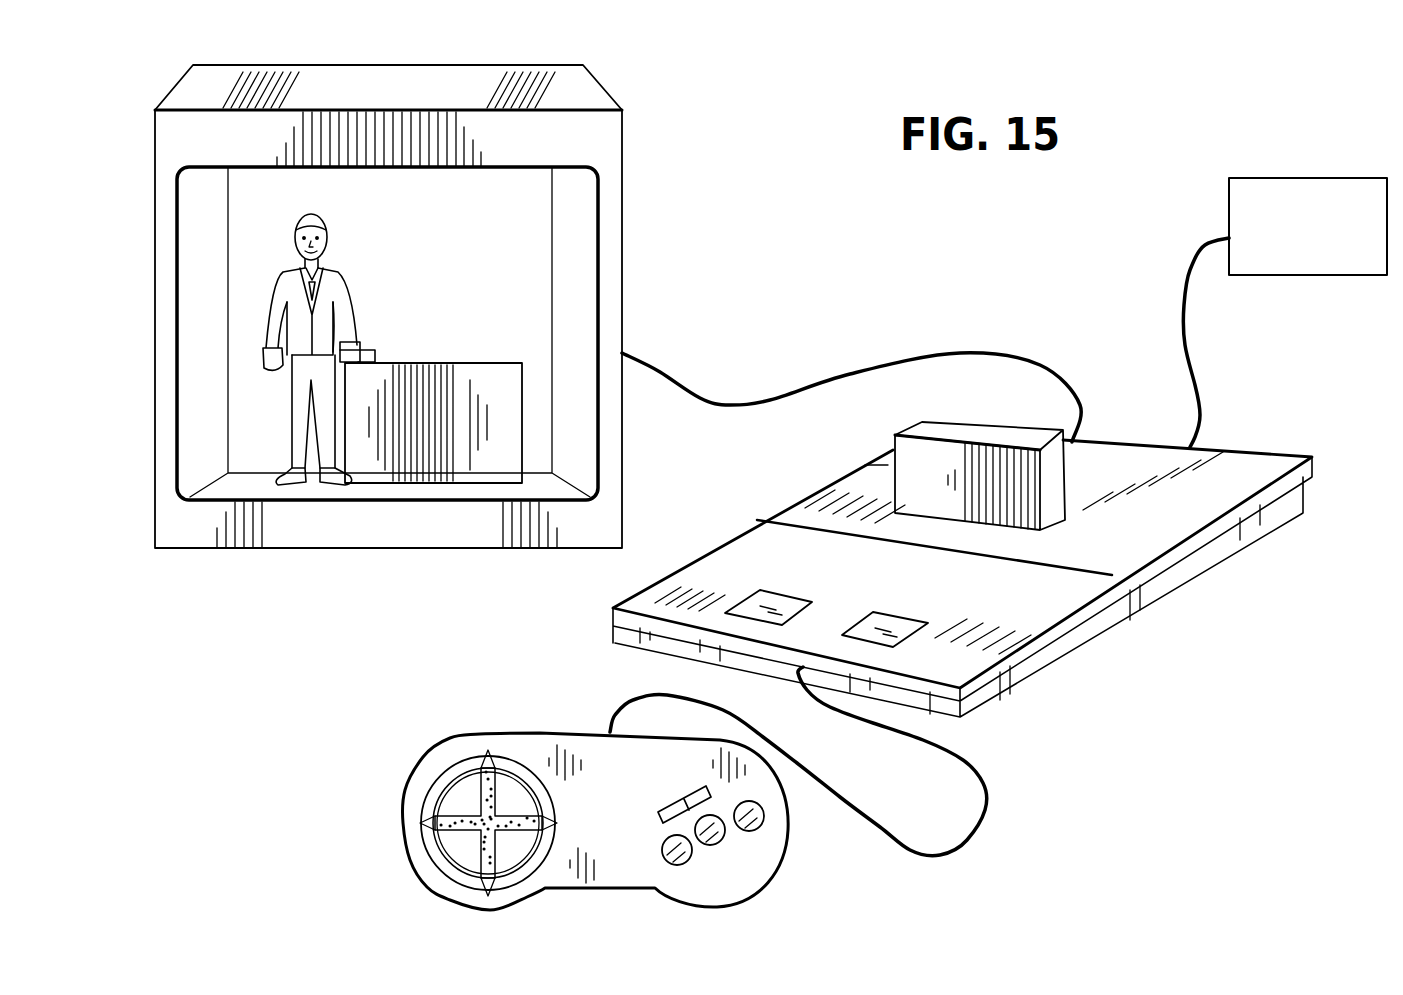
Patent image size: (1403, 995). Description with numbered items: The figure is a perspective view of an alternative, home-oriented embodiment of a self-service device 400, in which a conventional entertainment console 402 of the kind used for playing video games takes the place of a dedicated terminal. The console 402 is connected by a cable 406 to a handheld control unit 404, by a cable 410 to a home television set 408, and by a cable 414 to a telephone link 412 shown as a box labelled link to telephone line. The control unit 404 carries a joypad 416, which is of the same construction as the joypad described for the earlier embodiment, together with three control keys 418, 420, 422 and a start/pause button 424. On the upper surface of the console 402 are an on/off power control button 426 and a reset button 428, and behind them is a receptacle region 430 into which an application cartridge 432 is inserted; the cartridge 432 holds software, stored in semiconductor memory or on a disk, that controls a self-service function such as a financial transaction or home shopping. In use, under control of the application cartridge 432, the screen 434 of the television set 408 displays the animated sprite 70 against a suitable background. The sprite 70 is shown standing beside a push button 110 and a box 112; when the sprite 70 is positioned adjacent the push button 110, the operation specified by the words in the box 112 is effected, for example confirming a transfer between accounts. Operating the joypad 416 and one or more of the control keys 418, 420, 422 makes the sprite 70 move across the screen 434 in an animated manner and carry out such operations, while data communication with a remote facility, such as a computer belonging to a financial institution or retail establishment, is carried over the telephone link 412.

The sprite 70 is at (282, 409).
The push button 110 is at (370, 348).
The box 112 is at (458, 363).
The self-service device 400 is at (400, 643).
The entertainment console 402 is at (1080, 632).
The control unit 404 is at (760, 887).
The cable 406 is at (977, 837).
The television set 408 is at (622, 163).
The cable 410 is at (825, 380).
The telephone link 412 is at (1300, 178).
The cable 414 is at (1195, 373).
The joypad 416 is at (428, 792).
The control key 418 is at (662, 845).
The control key 420 is at (712, 837).
The control key 422 is at (760, 830).
The start/pause button 424 is at (680, 793).
The on/off power control button 426 is at (778, 600).
The reset button 428 is at (895, 625).
The receptacle region 430 is at (1050, 520).
The application cartridge 432 is at (965, 432).
The screen 434 is at (593, 250).